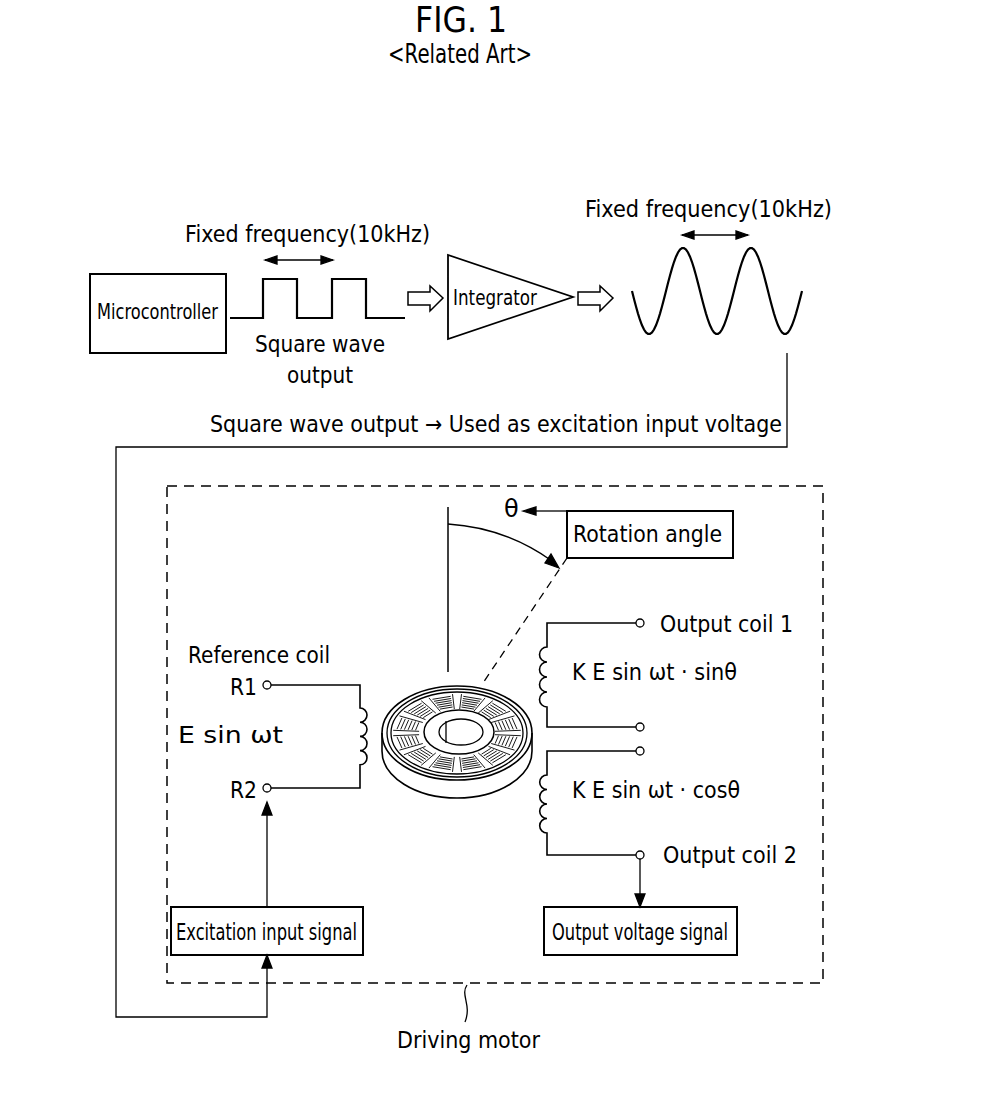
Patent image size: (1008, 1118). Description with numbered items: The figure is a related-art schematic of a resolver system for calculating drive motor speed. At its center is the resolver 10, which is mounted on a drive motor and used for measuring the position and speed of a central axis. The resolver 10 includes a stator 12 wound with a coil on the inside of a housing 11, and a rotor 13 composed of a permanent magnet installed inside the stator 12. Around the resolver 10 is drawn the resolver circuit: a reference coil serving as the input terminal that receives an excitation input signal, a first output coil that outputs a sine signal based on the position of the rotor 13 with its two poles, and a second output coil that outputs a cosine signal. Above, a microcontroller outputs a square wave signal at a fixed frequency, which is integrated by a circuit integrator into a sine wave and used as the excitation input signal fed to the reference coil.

The resolver 10 is at (439, 717).
The housing 11 is at (405, 775).
The stator 12 is at (445, 768).
The rotor 13 is at (467, 747).